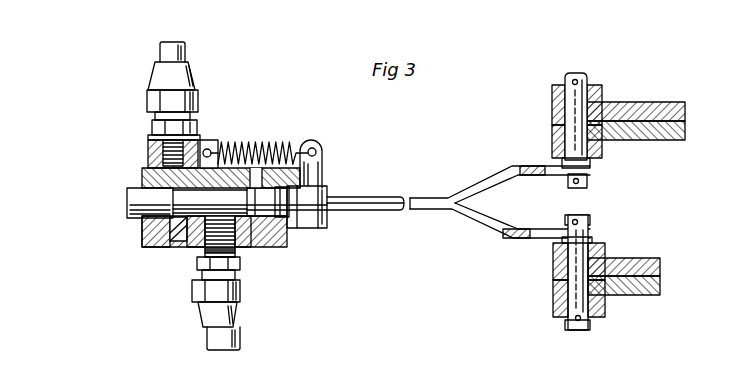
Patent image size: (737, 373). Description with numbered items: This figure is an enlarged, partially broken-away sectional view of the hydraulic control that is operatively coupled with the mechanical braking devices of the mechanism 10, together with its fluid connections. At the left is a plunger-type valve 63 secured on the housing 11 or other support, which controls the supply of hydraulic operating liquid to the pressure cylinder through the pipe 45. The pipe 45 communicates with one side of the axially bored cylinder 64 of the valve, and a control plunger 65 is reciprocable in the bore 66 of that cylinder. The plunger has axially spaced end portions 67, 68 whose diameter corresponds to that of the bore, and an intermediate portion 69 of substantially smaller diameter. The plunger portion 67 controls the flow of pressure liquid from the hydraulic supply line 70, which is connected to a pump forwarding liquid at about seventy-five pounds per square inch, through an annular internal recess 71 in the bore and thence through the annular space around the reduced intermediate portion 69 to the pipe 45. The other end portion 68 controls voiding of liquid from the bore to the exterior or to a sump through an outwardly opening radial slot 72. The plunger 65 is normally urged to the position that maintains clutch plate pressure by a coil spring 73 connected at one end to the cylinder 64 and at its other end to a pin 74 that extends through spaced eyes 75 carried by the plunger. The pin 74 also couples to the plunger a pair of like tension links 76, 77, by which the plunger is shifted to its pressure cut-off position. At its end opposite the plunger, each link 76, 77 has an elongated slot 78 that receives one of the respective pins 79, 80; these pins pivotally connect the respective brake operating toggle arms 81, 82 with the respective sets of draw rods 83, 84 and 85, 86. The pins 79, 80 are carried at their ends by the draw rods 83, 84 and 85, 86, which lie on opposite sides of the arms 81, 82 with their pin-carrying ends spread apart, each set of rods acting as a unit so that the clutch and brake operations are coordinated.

The control apparatus 10 is at (500, 369).
The housing 11 is at (66, 360).
The pipe 45 is at (207, 337).
The plunger-type valve 63 is at (266, 248).
The cylinder 64 is at (266, 246).
The control plunger 65 is at (128, 196).
The bore 66 is at (247, 246).
The plunger end portion 67 is at (147, 226).
The plunger end portion 68 is at (289, 245).
The intermediate portion 69 is at (177, 241).
The hydraulic supply line 70 is at (160, 53).
The annular internal recess 71 is at (152, 238).
The radial slot 72 is at (259, 146).
The coil spring 73 is at (234, 146).
The pin 74 is at (323, 158).
The eyes 75 is at (323, 220).
The tension link 76 is at (484, 222).
The tension link 77 is at (487, 182).
The elongated slot 78 is at (546, 175).
The pin 79 is at (573, 285).
The pin 80 is at (572, 110).
The brake operating toggle arm 81 is at (657, 272).
The brake operating toggle arm 82 is at (640, 101).
The draw rod 83 is at (605, 306).
The draw rod 84 is at (602, 244).
The draw rod 85 is at (602, 150).
The draw rod 86 is at (601, 87).